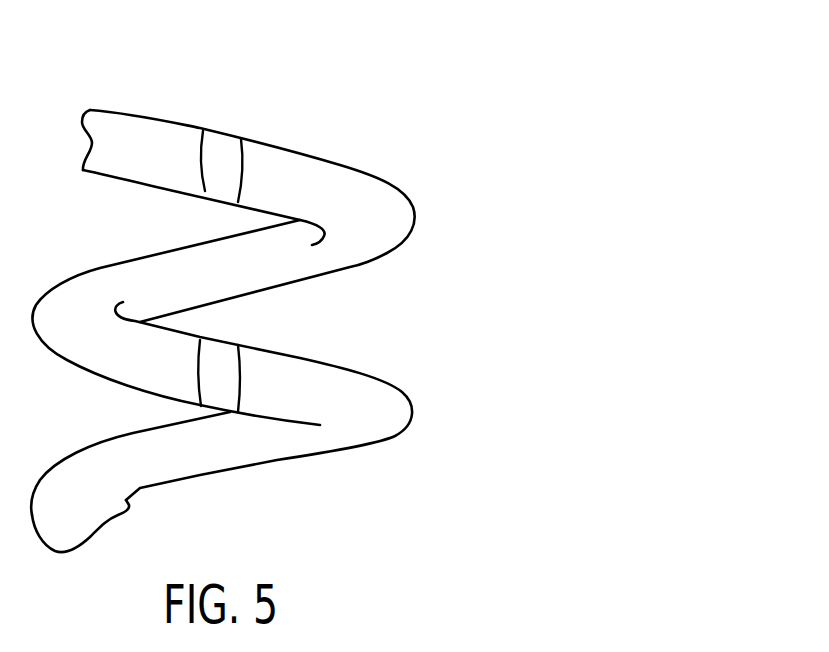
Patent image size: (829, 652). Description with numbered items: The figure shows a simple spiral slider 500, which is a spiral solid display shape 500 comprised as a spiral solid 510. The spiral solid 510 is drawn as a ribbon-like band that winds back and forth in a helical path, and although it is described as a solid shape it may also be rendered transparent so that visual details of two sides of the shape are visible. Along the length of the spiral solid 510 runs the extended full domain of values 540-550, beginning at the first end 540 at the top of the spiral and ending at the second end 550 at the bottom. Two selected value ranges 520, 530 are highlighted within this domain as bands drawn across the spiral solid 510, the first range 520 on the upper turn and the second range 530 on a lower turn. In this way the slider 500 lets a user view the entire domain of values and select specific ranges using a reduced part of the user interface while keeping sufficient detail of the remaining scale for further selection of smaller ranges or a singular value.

The spiral solid display shape 500 is at (489, 73).
The spiral solid 510 is at (415, 208).
The selected value range 520 is at (223, 130).
The selected value range 530 is at (227, 341).
The extended full domain of values start 540 is at (127, 113).
The extended full domain of values end 550 is at (131, 507).